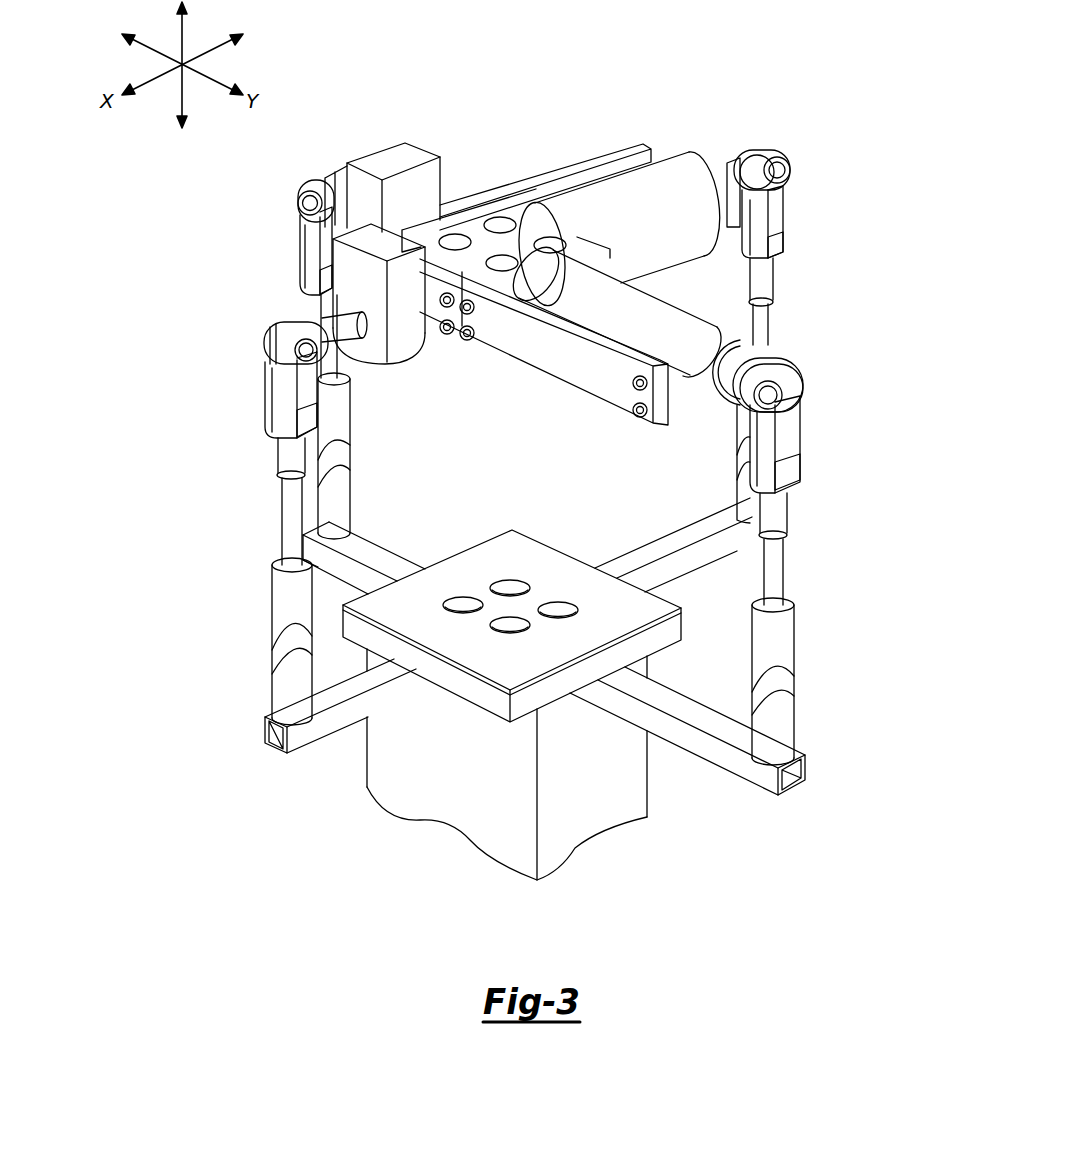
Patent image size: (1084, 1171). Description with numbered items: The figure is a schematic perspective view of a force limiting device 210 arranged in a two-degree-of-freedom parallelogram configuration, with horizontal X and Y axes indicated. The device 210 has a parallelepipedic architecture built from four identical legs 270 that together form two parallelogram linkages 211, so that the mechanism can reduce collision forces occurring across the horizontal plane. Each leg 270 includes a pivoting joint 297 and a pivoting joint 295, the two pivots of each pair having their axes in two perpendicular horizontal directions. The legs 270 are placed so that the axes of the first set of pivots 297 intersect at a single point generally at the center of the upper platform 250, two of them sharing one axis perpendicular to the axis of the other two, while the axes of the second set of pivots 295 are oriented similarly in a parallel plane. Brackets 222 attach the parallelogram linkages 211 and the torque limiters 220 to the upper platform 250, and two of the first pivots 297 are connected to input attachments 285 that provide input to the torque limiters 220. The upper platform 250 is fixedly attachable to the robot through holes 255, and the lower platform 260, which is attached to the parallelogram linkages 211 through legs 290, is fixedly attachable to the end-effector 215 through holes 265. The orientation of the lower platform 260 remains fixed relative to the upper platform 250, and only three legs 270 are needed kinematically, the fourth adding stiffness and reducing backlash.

The force limiting device 210 is at (764, 44).
The parallelogram linkage 211 is at (278, 456).
The end-effector 215 is at (636, 783).
The torque limiter 220 is at (690, 172).
The bracket 222 is at (582, 163).
The upper platform 250 is at (462, 232).
The holes 255 is at (528, 216).
The lower platform 260 is at (491, 557).
The holes 265 is at (543, 552).
The leg 270 is at (768, 323).
The input attachment 285 is at (754, 150).
The leg 290 is at (372, 556).
The pivoting joint 295 is at (372, 444).
The pivoting joint 297 is at (291, 178).